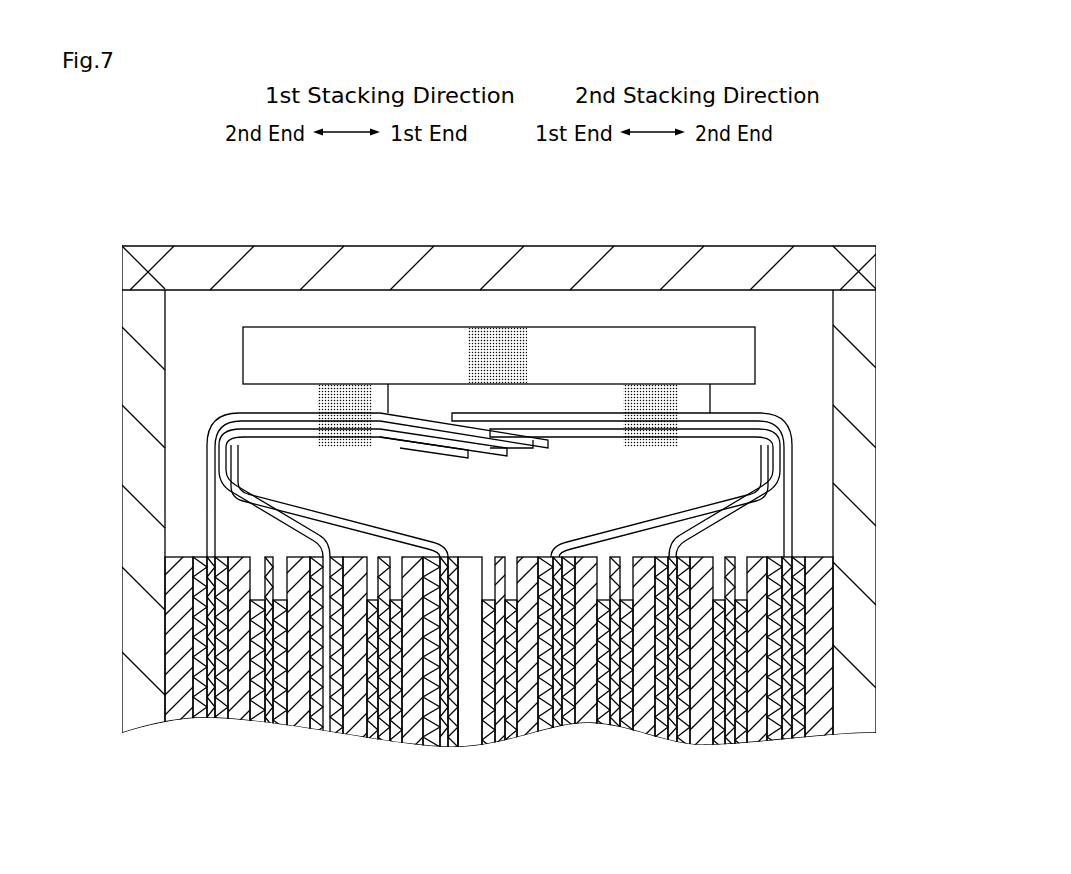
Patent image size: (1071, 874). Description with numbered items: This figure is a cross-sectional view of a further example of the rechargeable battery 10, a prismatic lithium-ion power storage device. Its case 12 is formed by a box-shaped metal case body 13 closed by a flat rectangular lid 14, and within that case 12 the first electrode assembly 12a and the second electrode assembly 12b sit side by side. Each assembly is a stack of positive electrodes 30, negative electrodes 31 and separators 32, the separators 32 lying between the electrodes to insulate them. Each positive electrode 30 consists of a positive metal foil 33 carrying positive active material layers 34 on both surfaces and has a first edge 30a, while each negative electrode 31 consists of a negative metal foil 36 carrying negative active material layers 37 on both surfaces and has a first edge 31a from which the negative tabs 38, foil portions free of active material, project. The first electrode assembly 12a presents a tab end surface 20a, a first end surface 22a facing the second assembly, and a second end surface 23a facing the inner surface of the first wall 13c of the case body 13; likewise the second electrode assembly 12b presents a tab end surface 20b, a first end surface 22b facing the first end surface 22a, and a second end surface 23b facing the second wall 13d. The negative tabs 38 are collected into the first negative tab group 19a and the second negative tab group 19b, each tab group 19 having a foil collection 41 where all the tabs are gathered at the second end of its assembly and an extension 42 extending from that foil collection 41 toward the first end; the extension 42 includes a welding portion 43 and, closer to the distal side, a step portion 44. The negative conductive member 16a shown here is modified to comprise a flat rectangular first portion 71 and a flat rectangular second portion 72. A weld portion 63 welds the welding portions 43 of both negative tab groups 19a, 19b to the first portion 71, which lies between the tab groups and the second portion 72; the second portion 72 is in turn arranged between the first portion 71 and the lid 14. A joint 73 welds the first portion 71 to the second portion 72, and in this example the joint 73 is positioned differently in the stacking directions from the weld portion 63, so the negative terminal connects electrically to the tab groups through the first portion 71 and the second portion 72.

The rechargeable battery 10 is at (78, 233).
The case 12 is at (52, 263).
The case body 13 is at (122, 302).
The lid 14 is at (122, 264).
The first wall 13c is at (122, 466).
The second wall 13d is at (877, 412).
The negative conductive member 16a is at (478, 212).
The first portion 71 is at (428, 412).
The second portion 72 is at (456, 327).
The joint 73 is at (527, 349).
The bus bar 19 is at (495, 394).
The first negative tab group 19a is at (231, 409).
The second negative tab group 19b is at (773, 409).
The foil collection 41 is at (209, 452).
The extension 42 is at (405, 412).
The weld portion 63 is at (318, 398).
The welding portion 43 is at (338, 440).
The negative tab 38 is at (430, 440).
The step portion 44 is at (456, 450).
The tab end surface 20a is at (335, 557).
The tab end surface 20b is at (663, 557).
The first end surface 22a is at (481, 557).
The first end surface 22b is at (467, 748).
The first edge 31a is at (207, 557).
The first edge 30a is at (500, 557).
The first electrode assembly 12a is at (188, 613).
The second electrode assembly 12b is at (812, 602).
The second end surface 23a is at (192, 650).
The second end surface 23b is at (806, 665).
The separator 32 is at (243, 720).
The positive metal foil 33 is at (268, 722).
The positive active material layer 34 is at (245, 722).
The positive electrode 30 is at (335, 800).
The negative metal foil 36 is at (678, 742).
The negative active material layer 37 is at (657, 742).
The negative electrode 31 is at (735, 800).